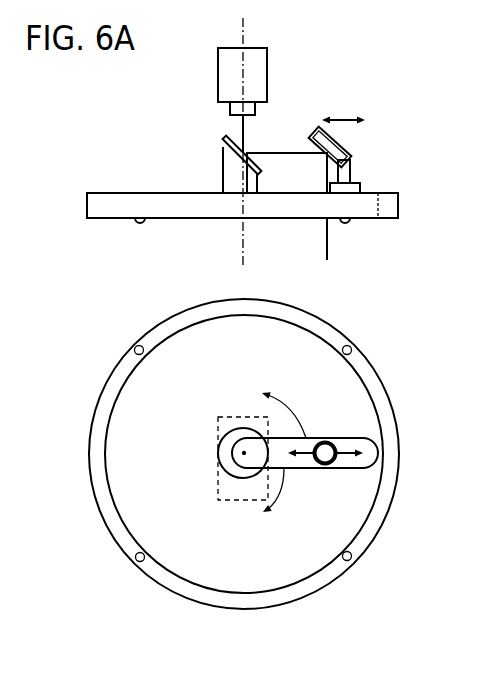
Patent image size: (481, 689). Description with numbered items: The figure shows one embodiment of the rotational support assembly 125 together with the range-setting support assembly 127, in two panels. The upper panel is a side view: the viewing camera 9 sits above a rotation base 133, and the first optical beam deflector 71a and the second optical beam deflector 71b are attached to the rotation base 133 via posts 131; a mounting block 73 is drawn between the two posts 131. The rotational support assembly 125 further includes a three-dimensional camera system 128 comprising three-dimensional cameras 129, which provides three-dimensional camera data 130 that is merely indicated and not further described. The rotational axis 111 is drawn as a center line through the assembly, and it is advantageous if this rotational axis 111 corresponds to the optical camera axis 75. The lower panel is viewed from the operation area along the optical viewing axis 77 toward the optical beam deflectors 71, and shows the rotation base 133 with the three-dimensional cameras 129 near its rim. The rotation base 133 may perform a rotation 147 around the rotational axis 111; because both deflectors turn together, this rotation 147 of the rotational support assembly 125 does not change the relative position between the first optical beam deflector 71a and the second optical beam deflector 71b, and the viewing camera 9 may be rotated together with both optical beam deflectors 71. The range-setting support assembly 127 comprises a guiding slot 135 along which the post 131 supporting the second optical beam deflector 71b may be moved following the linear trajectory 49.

The viewing camera 9 is at (220, 63).
The rotational support assembly 125 is at (186, 109).
The optical beam deflector 71 is at (291, 284).
The first optical beam deflector 71a is at (223, 145).
The second optical beam deflector 71b is at (311, 150).
The post 131 is at (226, 172).
The mounting block 73 is at (287, 173).
The linear trajectory 49 is at (348, 119).
The range-setting support assembly 127 is at (369, 157).
The rotation base 133 is at (398, 204).
The 3D camera system 128 is at (372, 226).
The 3D camera 129 is at (346, 226).
The 3D camera data 130 is at (140, 226).
The rotational axis 111 is at (243, 223).
The optical camera axis 75 is at (243, 258).
The optical viewing axis 77 is at (327, 262).
The guiding slot 135 is at (372, 450).
The rotation 147 is at (292, 468).